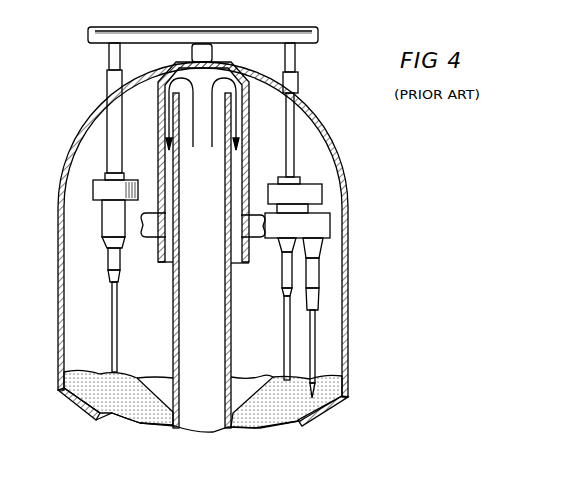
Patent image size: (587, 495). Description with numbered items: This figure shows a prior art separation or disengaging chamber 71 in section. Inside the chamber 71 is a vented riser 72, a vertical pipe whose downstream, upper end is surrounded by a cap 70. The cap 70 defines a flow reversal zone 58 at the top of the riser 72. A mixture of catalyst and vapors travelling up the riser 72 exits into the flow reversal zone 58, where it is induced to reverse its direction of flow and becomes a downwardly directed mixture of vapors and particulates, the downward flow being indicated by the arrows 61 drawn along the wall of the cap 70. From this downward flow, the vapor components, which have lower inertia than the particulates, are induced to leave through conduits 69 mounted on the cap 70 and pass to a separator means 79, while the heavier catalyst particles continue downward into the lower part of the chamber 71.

The flow reversal zone 58 is at (193, 72).
The arrows 61 is at (158, 130).
The conduits 69 is at (153, 238).
The cap 70 is at (249, 105).
The separation or disengaging chamber 71 is at (91, 117).
The riser 72 is at (173, 318).
The separator means 79 is at (328, 247).